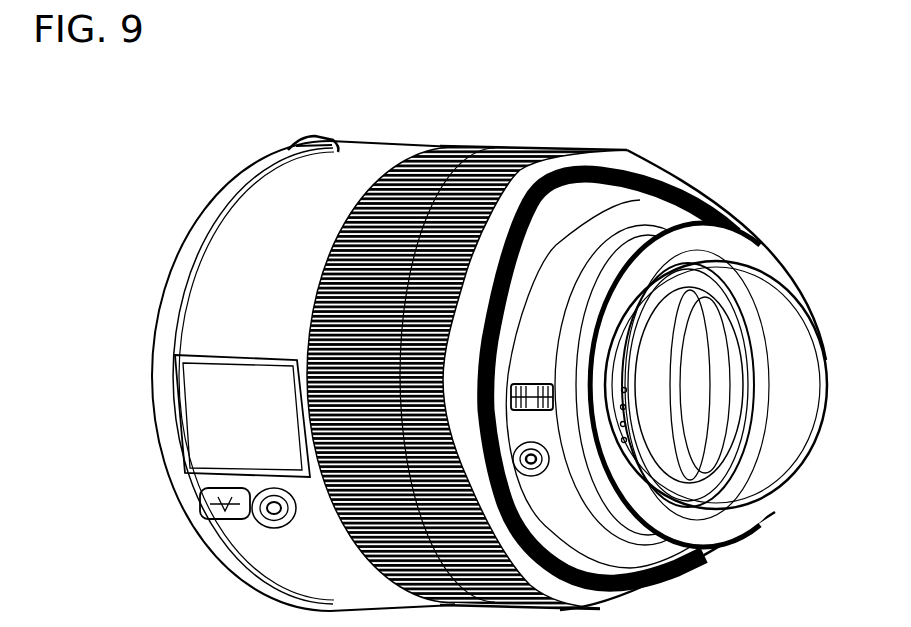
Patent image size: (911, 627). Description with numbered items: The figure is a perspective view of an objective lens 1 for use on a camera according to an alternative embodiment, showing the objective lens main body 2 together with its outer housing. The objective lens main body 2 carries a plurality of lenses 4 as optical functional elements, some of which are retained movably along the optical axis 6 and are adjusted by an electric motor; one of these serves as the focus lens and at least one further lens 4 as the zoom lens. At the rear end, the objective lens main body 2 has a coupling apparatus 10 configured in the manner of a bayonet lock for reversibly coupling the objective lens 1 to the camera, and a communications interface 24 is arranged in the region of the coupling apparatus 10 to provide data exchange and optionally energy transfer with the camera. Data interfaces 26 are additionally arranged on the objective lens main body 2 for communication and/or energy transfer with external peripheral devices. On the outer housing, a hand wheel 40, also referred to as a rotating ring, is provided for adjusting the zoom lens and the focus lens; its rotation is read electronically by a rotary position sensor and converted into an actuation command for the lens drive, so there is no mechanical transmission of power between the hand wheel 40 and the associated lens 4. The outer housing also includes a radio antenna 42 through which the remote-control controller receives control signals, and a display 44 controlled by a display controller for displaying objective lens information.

The objective lens 1 is at (110, 137).
The objective lens main body 2 is at (650, 203).
The lens 4 is at (695, 353).
The optical axis 6 is at (775, 392).
The coupling apparatus 10 is at (754, 245).
The communications interface 24 is at (690, 425).
The data interface 26 is at (276, 528).
The hand wheel 40 is at (497, 152).
The radio antenna 42 is at (312, 143).
The display 44 is at (190, 422).